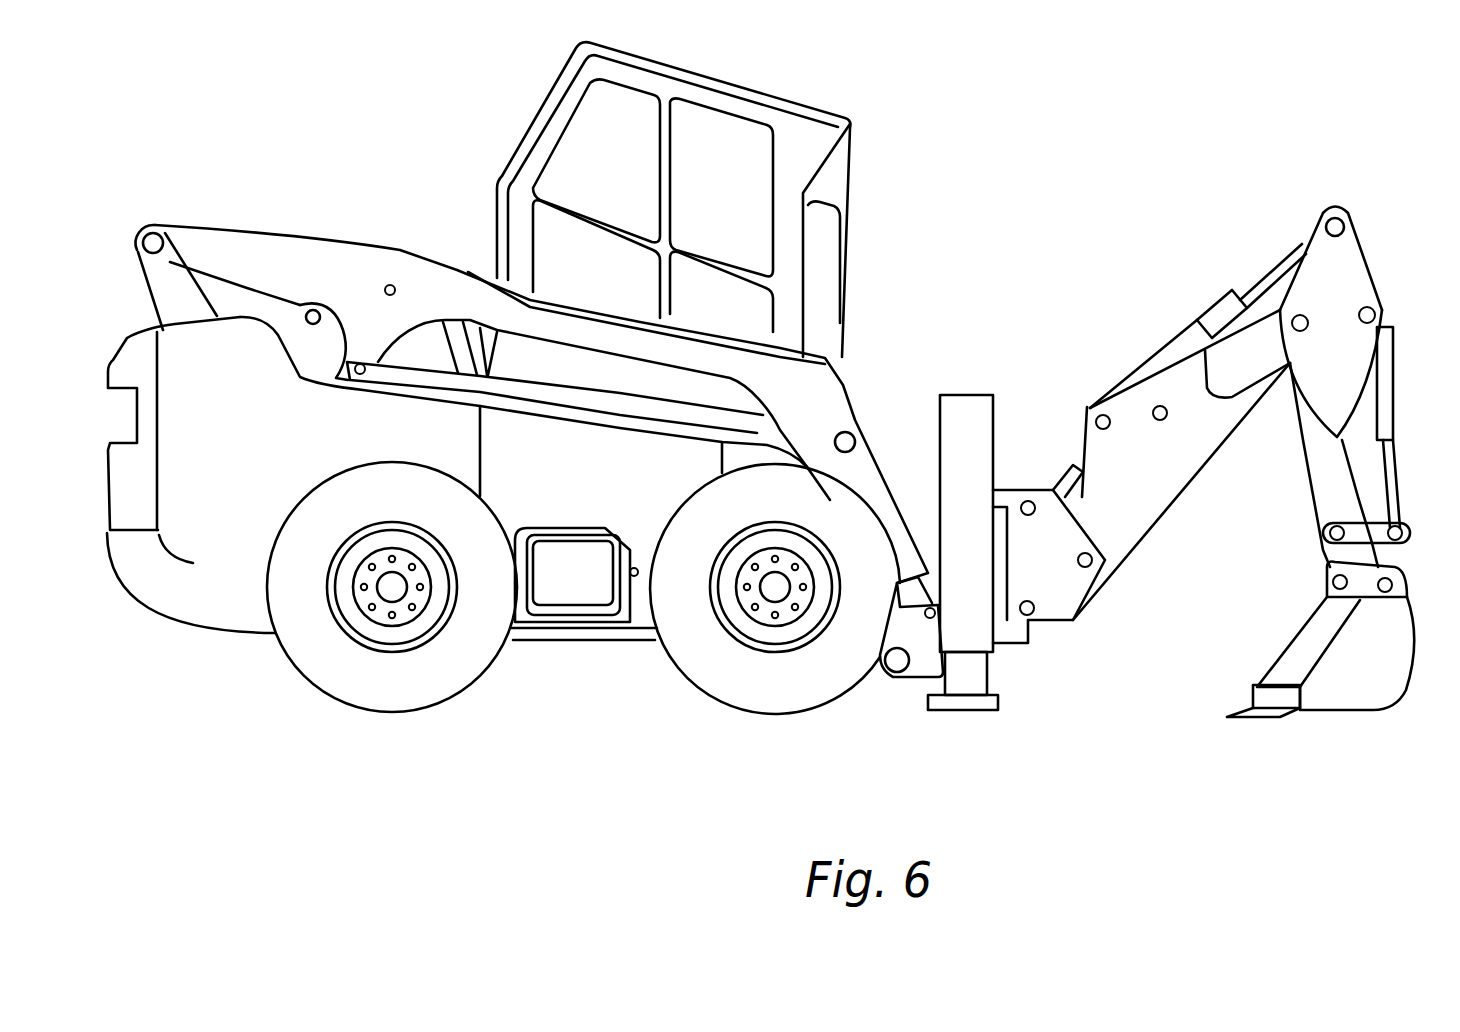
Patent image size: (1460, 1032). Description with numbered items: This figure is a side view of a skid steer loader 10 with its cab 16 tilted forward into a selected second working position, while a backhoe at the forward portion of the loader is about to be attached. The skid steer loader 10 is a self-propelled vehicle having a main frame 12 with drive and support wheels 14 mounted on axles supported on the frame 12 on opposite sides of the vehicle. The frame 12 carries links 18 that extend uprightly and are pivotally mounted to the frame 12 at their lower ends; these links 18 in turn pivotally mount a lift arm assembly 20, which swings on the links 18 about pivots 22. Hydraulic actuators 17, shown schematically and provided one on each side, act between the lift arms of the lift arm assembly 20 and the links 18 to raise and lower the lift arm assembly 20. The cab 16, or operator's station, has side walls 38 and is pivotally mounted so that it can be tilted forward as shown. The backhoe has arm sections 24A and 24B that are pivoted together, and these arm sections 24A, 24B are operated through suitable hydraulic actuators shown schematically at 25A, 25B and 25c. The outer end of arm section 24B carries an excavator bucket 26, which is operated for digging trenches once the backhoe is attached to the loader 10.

The skid steer loader 10 is at (394, 229).
The main frame 12 is at (540, 617).
The drive and support wheels 14 is at (312, 648).
The cab 16 is at (571, 145).
The hydraulic actuators 17 is at (287, 353).
The links 18 is at (172, 283).
The lift arm assembly 20 is at (311, 250).
The pivots 22 is at (152, 234).
The arm section 24A is at (1158, 480).
The arm section 24B is at (1317, 445).
The hydraulic actuator 25A is at (1080, 460).
The hydraulic actuator 25B is at (1190, 332).
The hydraulic actuator 25c is at (1380, 405).
The excavator bucket 26 is at (1410, 640).
The side walls 38 is at (642, 167).